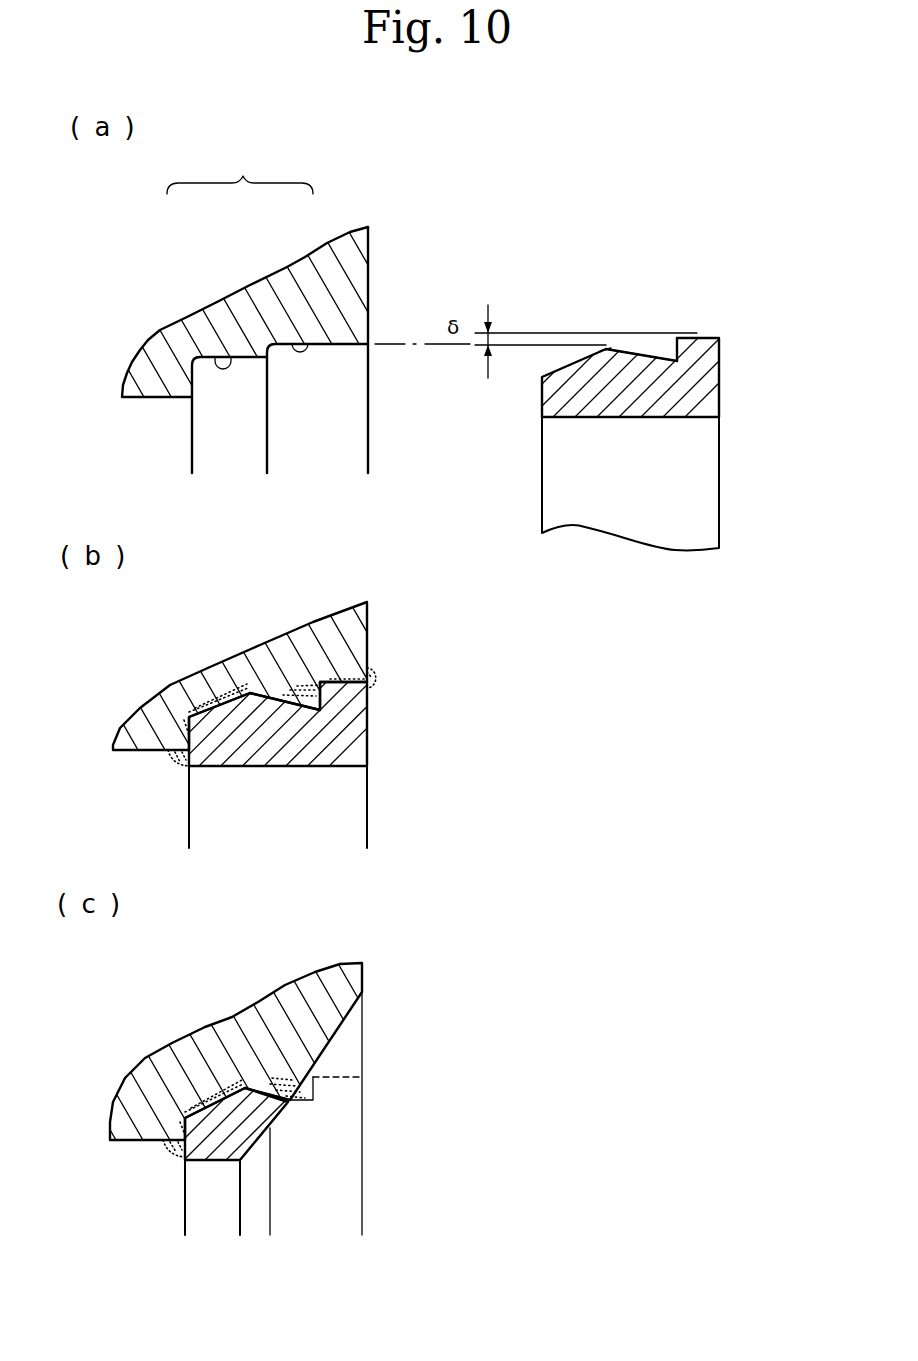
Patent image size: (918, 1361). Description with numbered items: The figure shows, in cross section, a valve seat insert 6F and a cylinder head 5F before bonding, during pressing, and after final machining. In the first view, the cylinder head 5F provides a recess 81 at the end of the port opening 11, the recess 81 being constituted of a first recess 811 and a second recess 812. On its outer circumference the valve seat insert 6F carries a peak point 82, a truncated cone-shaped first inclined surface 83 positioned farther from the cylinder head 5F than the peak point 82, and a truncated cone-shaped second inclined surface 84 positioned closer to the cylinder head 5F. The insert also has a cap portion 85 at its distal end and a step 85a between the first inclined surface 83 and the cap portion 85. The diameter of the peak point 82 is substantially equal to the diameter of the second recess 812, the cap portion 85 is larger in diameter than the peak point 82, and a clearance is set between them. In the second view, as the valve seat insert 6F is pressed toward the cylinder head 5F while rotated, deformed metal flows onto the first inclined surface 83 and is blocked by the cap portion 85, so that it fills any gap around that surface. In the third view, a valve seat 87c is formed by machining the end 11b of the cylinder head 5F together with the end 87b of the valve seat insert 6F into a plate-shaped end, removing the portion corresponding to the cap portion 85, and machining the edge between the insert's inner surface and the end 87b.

The cylinder head 5F is at (371, 288).
The valve seat insert 6F is at (722, 388).
The port opening 11 is at (163, 400).
The end of the cylinder head 11b is at (353, 1015).
The recess 81 is at (240, 170).
The first recess 811 is at (216, 357).
The second recess 812 is at (293, 343).
The peak point 82 is at (605, 349).
The first inclined surface 83 is at (634, 354).
The second inclined surface 84 is at (558, 368).
The cap portion 85 is at (708, 338).
The step 85a is at (662, 339).
The end of the valve seat insert 87b is at (314, 1101).
The valve seat 87c is at (250, 1157).